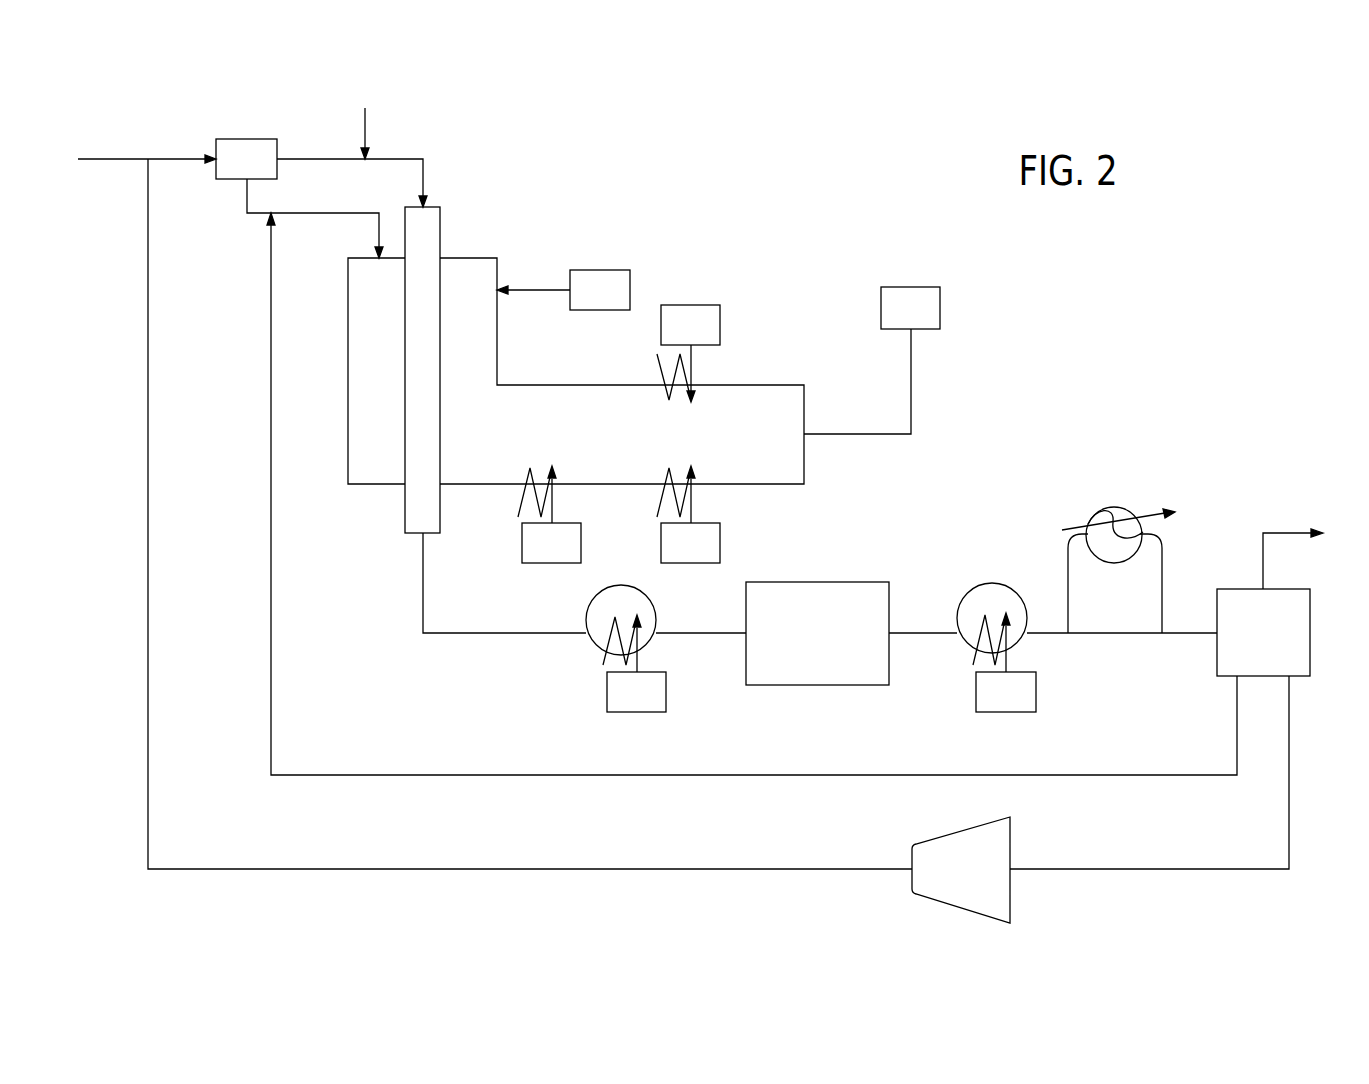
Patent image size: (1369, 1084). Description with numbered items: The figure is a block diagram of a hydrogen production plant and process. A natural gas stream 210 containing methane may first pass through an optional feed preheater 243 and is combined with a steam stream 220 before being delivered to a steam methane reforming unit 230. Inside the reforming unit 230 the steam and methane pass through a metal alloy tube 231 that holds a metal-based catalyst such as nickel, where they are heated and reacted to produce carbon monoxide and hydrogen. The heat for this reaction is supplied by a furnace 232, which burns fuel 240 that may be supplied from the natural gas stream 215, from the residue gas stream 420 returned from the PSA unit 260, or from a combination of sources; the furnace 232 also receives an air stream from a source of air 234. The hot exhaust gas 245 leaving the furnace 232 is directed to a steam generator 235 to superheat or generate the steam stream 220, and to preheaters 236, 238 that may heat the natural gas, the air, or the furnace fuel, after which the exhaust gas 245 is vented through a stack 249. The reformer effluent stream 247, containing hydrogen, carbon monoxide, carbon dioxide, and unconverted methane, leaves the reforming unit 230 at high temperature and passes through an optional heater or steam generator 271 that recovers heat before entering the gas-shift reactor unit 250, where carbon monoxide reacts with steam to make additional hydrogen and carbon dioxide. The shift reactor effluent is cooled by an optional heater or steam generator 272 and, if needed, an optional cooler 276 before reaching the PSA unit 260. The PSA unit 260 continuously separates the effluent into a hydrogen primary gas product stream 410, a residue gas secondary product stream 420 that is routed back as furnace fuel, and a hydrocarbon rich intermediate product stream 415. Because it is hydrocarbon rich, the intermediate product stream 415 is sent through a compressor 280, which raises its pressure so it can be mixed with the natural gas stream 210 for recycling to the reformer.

The natural gas stream 210 is at (474, 499).
The feed preheater 243 is at (227, 170).
The natural gas stream 215 is at (243, 192).
The fuel 240 is at (293, 213).
The steam stream 220 is at (352, 129).
The metal alloy tube 231 is at (440, 227).
The steam methane reforming unit 230 is at (482, 253).
The furnace 232 is at (367, 488).
The source of air 234 is at (581, 303).
The steam generator 235 is at (672, 338).
The preheater 236 is at (533, 556).
The preheater 238 is at (672, 556).
The exhaust gas 245 is at (820, 434).
The stack 249 is at (892, 321).
The effluent stream 247 is at (495, 637).
The heater or steam generator 271 is at (618, 705).
The gas-shift reactor unit 250 is at (798, 673).
The heater or steam generator 272 is at (987, 705).
The cooler 276 is at (1112, 506).
The PSA unit 260 is at (1246, 658).
The primary gas product stream 410 is at (1314, 547).
The residue gas stream 420 is at (1030, 775).
The intermediate product stream 415 is at (1133, 869).
The compressor 280 is at (961, 870).